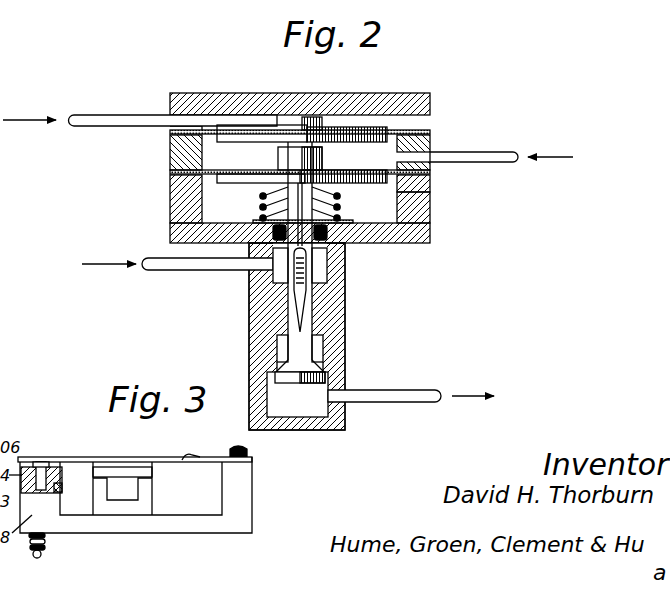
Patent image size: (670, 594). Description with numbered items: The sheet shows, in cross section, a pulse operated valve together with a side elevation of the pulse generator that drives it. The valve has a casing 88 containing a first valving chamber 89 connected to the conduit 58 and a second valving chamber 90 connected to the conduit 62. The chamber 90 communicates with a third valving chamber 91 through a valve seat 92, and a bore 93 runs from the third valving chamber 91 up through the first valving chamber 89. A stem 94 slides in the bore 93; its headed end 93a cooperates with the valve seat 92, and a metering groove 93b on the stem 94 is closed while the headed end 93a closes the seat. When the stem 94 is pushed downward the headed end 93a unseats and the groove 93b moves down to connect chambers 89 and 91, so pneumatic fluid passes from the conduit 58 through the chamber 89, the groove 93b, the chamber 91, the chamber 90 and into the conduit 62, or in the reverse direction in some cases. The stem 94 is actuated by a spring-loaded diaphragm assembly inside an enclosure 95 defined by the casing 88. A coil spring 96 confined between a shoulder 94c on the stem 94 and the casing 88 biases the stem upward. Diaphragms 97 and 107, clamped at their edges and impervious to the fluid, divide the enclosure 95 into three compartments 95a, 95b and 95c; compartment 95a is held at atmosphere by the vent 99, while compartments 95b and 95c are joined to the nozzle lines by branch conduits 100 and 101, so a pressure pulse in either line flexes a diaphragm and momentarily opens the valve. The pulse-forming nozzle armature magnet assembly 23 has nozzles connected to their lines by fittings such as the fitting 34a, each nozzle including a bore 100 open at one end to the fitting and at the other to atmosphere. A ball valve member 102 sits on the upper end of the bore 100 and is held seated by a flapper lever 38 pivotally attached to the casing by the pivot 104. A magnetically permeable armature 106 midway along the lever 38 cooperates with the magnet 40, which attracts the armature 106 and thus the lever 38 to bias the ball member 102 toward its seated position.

In FIG. 2, the casing 88 is at (400, 100).
In FIG. 2, the enclosure 95 is at (390, 218).
In FIG. 2, the compartment 95a is at (172, 192).
In FIG. 2, the compartment 95b is at (212, 158).
In FIG. 2, the compartment 95c is at (208, 118).
In FIG. 2, the vent 99 is at (430, 192).
In FIG. 2, the diaphragm 107 is at (243, 130).
In FIG. 2, the diaphragm 97 is at (338, 168).
In FIG. 2, the shoulder 94c is at (245, 177).
In FIG. 2, the coil spring 96 is at (333, 203).
In FIG. 2, the branch conduit 100 is at (107, 114).
In FIG. 3, the branch conduit 100 is at (57, 485).
In FIG. 2, the branch conduit 101 is at (477, 152).
In FIG. 2, the conduit 58 is at (160, 257).
In FIG. 2, the conduit 62 is at (430, 390).
In FIG. 2, the first valving chamber 89 is at (320, 255).
In FIG. 2, the third valving chamber 91 is at (318, 347).
In FIG. 2, the bore 93 is at (288, 312).
In FIG. 2, the headed end 93a is at (305, 392).
In FIG. 2, the metering groove 93b is at (300, 278).
In FIG. 2, the stem 94 is at (312, 318).
In FIG. 2, the valve seat 92 is at (273, 368).
In FIG. 2, the second valving chamber 90 is at (318, 410).
In FIG. 3, the nozzle armature magnet assembly 23 is at (186, 540).
In FIG. 3, the flapper lever 38 is at (87, 457).
In FIG. 3, the magnet 40 is at (132, 512).
In FIG. 3, the ball valve member 102 is at (40, 465).
In FIG. 3, the pivot 104 is at (208, 458).
In FIG. 3, the armature 106 is at (147, 470).
In FIG. 3, the fitting 34a is at (46, 550).